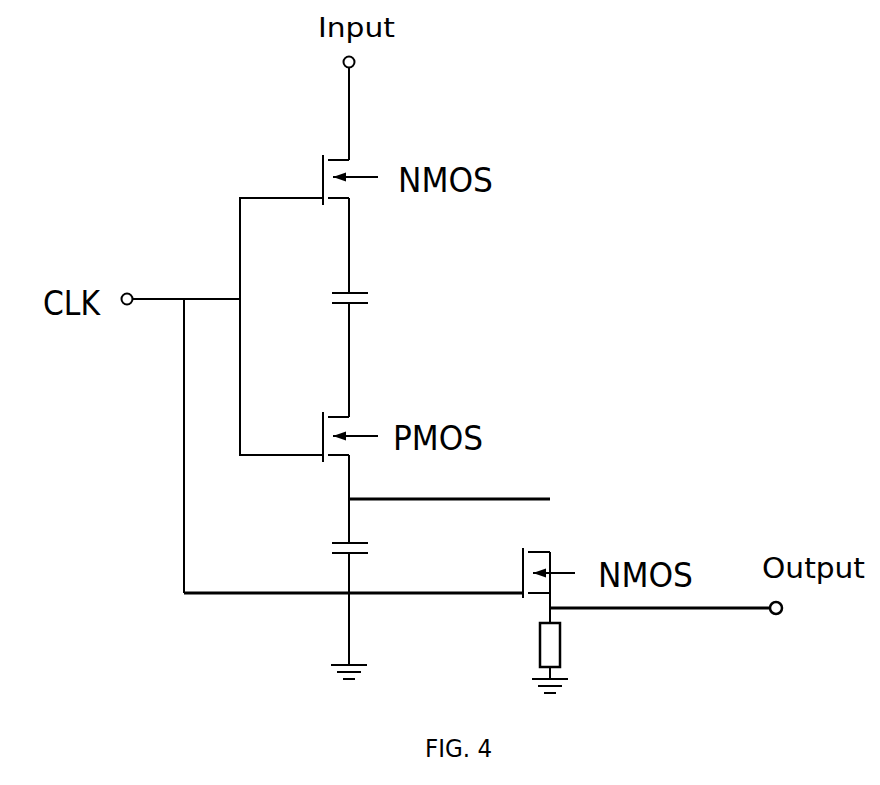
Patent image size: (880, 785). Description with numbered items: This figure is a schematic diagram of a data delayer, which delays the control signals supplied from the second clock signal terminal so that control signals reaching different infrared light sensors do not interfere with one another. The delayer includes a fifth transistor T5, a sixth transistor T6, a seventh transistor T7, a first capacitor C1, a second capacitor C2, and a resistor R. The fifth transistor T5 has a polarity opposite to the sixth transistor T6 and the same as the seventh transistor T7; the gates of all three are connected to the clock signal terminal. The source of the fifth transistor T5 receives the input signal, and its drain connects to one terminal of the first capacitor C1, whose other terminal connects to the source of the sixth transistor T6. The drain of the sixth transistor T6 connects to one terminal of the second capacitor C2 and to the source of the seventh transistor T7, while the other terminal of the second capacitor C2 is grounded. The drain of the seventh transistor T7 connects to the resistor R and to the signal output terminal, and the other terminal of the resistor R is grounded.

The fifth transistor T5 is at (333, 180).
The sixth transistor T6 is at (334, 437).
The seventh transistor T7 is at (533, 573).
The first capacitor C1 is at (374, 298).
The second capacitor C2 is at (377, 550).
The resistor R is at (539, 658).